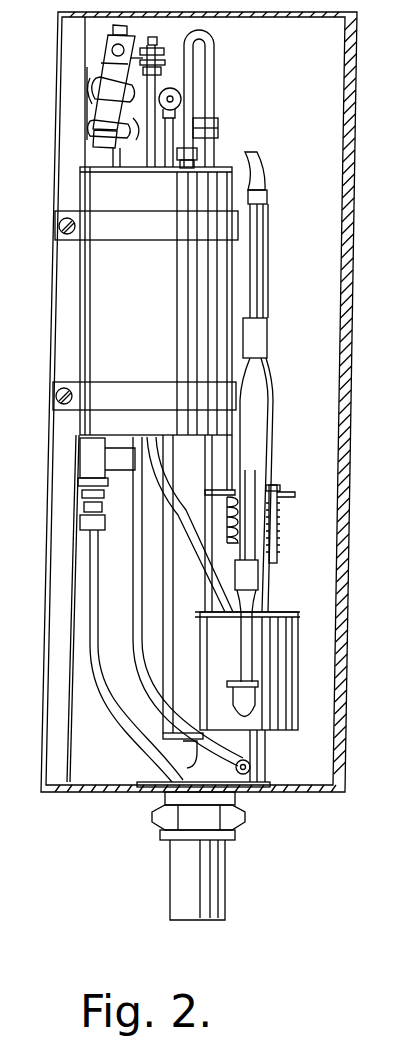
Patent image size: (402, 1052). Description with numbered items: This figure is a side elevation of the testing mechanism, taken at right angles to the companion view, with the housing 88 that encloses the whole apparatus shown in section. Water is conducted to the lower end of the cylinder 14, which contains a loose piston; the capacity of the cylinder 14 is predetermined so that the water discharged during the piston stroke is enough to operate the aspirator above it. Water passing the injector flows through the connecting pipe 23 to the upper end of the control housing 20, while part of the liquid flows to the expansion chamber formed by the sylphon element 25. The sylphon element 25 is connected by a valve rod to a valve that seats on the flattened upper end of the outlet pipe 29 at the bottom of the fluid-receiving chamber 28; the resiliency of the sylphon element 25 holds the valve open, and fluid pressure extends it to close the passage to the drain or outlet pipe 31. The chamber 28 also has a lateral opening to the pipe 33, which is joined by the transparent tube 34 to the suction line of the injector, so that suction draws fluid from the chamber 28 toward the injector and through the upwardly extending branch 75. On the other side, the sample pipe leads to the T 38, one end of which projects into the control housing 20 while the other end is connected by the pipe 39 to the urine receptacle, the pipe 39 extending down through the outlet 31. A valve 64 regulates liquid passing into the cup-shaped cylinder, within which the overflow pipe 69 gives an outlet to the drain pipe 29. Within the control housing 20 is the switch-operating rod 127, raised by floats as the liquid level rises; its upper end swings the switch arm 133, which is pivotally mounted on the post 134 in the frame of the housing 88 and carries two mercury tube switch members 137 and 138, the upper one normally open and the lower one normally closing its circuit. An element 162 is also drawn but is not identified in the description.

The cylinder 14 is at (197, 601).
The control housing 20 is at (223, 280).
The connecting pipe 23 is at (208, 97).
The sylphon element 25 is at (278, 522).
The fluid-receiving chamber 28 is at (283, 665).
The outlet pipe 29 is at (266, 748).
The drain or outlet pipe 31 is at (225, 852).
The pipe 33 is at (255, 612).
The transparent tube 34 is at (262, 452).
The T 38 is at (90, 455).
The pipe 39 is at (92, 625).
The valve 64 is at (172, 98).
The overflow pipe 69 is at (138, 583).
The upwardly extending branch 75 is at (258, 172).
The housing 88 is at (336, 560).
The switch-operating rod 127 is at (150, 145).
The switch arm 133 is at (108, 73).
The post 134 is at (112, 47).
The mercury tube switch member 137 is at (105, 99).
The mercury tube switch member 138 is at (95, 130).
The nut 162 is at (162, 165).